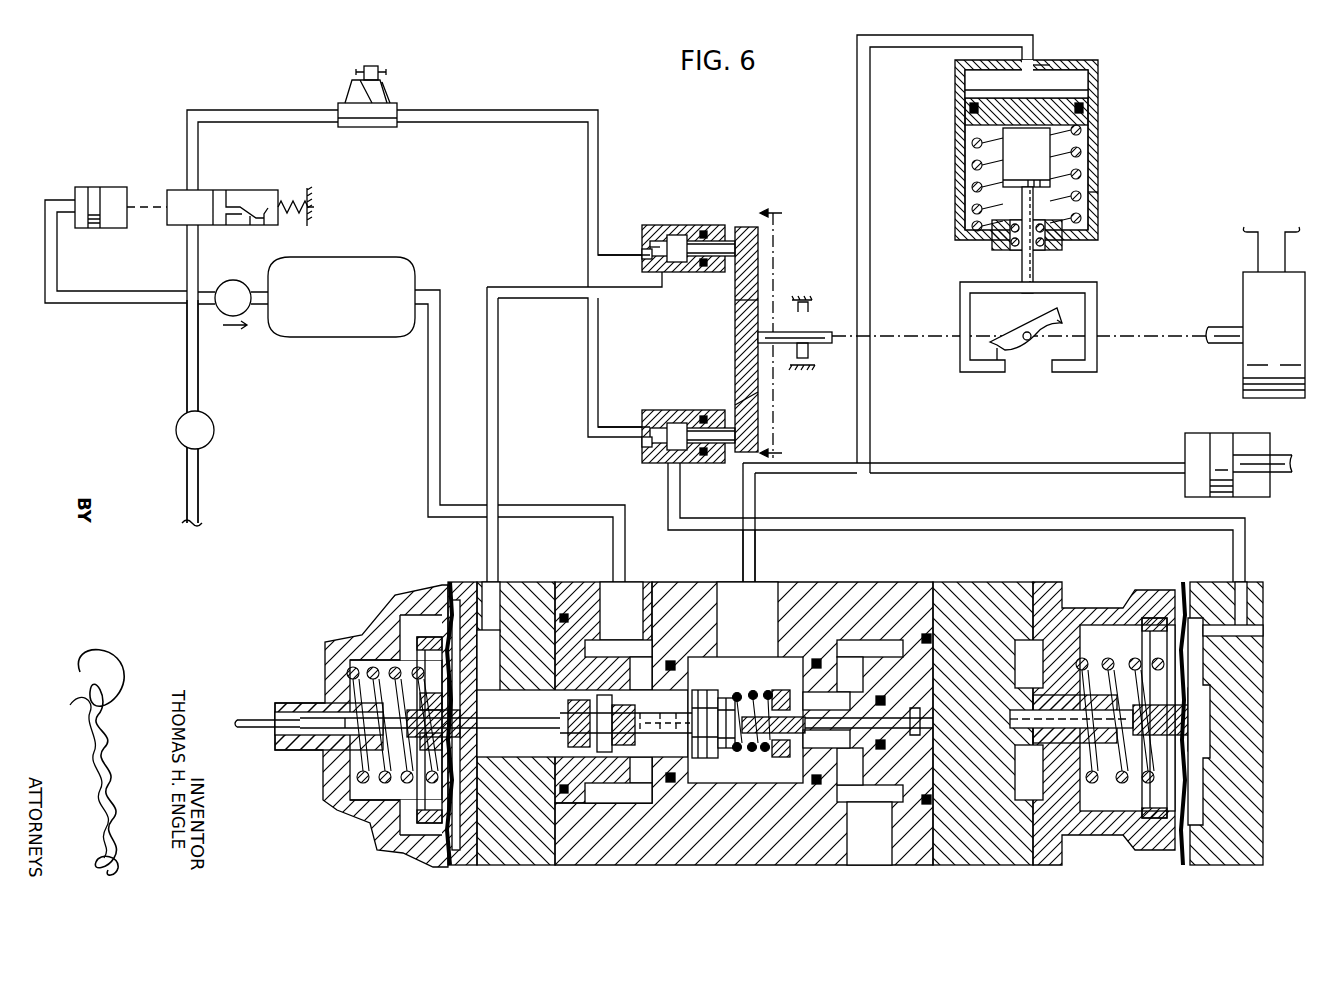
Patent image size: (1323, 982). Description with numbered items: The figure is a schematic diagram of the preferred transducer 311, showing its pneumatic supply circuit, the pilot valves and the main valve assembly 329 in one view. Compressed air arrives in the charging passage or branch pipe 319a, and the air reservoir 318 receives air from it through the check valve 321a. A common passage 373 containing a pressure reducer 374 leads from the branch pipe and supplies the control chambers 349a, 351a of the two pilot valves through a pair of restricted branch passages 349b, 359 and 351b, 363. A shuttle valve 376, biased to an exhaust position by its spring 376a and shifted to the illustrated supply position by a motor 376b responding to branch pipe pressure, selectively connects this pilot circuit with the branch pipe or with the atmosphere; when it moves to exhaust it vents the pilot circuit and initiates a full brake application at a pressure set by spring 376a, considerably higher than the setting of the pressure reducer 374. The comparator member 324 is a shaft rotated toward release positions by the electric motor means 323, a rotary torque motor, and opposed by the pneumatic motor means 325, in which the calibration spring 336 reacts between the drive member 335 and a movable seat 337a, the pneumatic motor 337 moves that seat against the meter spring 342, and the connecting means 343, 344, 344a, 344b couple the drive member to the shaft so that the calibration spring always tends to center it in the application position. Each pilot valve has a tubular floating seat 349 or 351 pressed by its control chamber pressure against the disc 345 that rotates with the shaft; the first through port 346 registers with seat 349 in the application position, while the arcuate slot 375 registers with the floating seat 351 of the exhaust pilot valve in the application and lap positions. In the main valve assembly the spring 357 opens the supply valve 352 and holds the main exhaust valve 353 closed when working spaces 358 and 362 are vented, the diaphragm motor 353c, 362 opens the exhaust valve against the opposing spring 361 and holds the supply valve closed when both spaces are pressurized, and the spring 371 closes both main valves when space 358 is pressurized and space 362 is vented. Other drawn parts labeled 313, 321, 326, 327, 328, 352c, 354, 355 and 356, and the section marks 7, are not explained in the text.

The transducer 311 is at (1140, 112).
The electrical leads 313 is at (1288, 227).
The air reservoir 318 is at (340, 257).
The branch pipe 319a is at (198, 375).
The pressure gauge 321 is at (216, 430).
The check valve 321a is at (231, 279).
The electric motor means 323 is at (1243, 272).
The comparator member 324 is at (793, 328).
The pneumatic motor means 325 is at (1108, 192).
The valve assembly 326 is at (800, 246).
The pipe 327 is at (490, 436).
The pipe 328 is at (968, 518).
The main valve assembly 329 is at (712, 578).
The drive member 335 is at (1035, 266).
The calibration spring 336 is at (995, 240).
The pneumatic motor 337 is at (1098, 95).
The movable seat 337a is at (977, 98).
The meter spring 342 is at (1090, 170).
The connecting means 343 is at (1097, 300).
The connecting means 344 is at (1030, 325).
The connecting means 344a is at (1000, 365).
The connecting means 344b is at (1068, 324).
The valve disc 345 is at (748, 226).
The first through port 346 is at (738, 270).
The tubular floating seat 349 is at (702, 222).
The control chamber 349a is at (675, 232).
The restricted branch passage 349b is at (602, 240).
The floating seat 351 is at (718, 410).
The control chamber 351a is at (675, 423).
The restricted branch passage 351b is at (614, 402).
The supply valve 352 is at (700, 692).
The diaphragm 352c is at (447, 585).
The main exhaust valve 353 is at (788, 754).
The diaphragm motor 353c is at (1195, 822).
The pipe 354 is at (542, 503).
The exhaust port 355 is at (890, 838).
The chamber 356 is at (782, 681).
The spring 357 is at (372, 634).
The working space 358 is at (467, 828).
The restricted branch passage 359 is at (650, 255).
The spring 361 is at (1104, 658).
The working space 362 is at (1205, 668).
The restricted branch passage 363 is at (636, 450).
The spring 371 is at (722, 748).
The common passage 373 is at (470, 110).
The pressure reducer 374 is at (380, 96).
The arcuate slot 375 is at (745, 414).
The shuttle valve 376 is at (255, 190).
The spring 376a is at (294, 190).
The motor 376b is at (108, 188).
The section line 7 is at (777, 334).